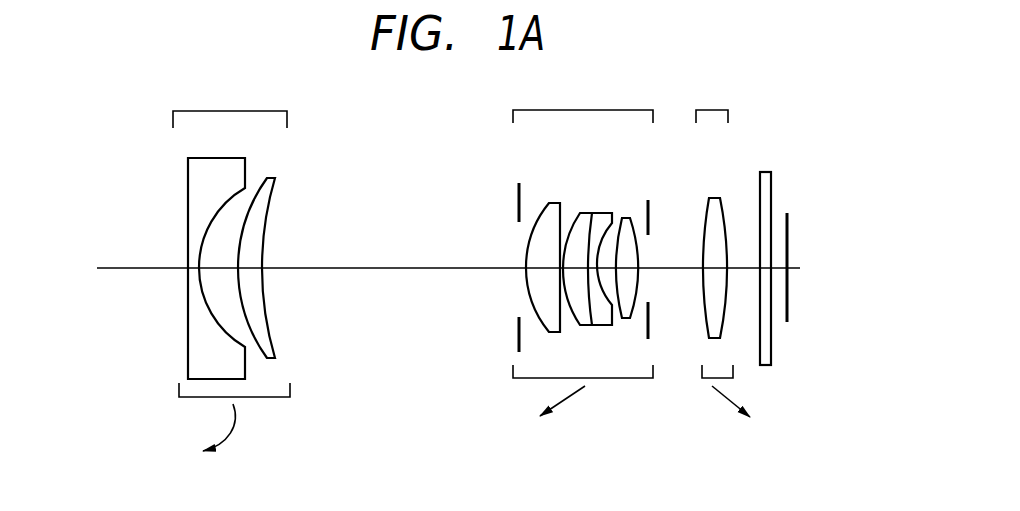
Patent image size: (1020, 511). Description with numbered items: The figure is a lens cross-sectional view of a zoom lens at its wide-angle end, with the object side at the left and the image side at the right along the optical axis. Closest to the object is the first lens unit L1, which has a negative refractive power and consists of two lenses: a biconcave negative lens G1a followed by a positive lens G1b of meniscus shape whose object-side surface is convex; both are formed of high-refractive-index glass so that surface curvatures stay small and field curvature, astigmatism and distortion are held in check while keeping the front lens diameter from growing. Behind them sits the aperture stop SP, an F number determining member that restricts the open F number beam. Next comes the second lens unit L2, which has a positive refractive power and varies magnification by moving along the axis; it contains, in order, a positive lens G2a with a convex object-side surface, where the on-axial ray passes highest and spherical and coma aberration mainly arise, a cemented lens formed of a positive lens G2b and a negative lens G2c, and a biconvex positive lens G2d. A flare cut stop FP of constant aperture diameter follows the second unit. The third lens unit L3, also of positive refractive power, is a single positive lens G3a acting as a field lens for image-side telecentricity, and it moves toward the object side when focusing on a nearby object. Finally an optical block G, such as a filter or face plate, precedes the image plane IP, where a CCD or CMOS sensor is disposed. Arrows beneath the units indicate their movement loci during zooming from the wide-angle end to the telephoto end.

The first lens unit L1 is at (232, 268).
The negative lens G1a is at (200, 187).
The positive lens G1b is at (263, 217).
The aperture stop SP is at (519, 198).
The second lens unit L2 is at (577, 247).
The positive lens G2a is at (550, 212).
The positive lens G2b is at (583, 213).
The negative lens G2c is at (603, 213).
The positive lens G2d is at (623, 218).
The flare cut stop FP is at (651, 215).
The third lens unit L3 is at (721, 248).
The positive lens G3a is at (715, 202).
The optical block G is at (767, 177).
The image plane IP is at (789, 223).